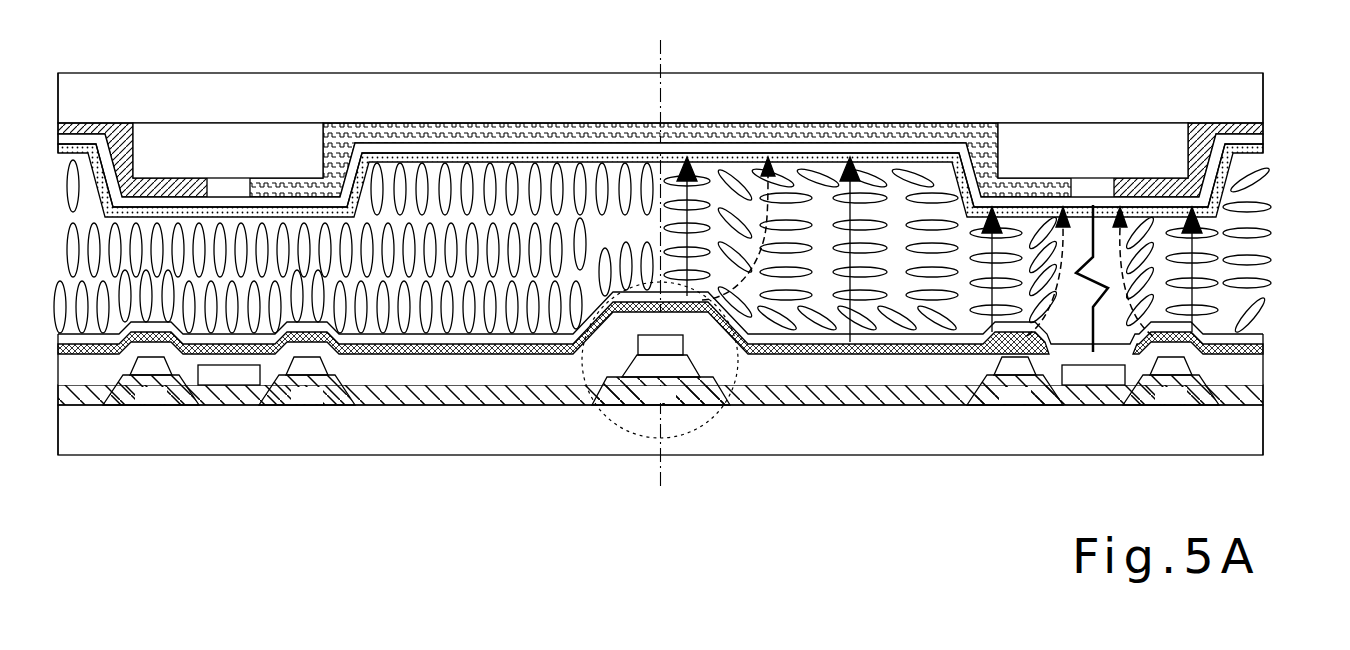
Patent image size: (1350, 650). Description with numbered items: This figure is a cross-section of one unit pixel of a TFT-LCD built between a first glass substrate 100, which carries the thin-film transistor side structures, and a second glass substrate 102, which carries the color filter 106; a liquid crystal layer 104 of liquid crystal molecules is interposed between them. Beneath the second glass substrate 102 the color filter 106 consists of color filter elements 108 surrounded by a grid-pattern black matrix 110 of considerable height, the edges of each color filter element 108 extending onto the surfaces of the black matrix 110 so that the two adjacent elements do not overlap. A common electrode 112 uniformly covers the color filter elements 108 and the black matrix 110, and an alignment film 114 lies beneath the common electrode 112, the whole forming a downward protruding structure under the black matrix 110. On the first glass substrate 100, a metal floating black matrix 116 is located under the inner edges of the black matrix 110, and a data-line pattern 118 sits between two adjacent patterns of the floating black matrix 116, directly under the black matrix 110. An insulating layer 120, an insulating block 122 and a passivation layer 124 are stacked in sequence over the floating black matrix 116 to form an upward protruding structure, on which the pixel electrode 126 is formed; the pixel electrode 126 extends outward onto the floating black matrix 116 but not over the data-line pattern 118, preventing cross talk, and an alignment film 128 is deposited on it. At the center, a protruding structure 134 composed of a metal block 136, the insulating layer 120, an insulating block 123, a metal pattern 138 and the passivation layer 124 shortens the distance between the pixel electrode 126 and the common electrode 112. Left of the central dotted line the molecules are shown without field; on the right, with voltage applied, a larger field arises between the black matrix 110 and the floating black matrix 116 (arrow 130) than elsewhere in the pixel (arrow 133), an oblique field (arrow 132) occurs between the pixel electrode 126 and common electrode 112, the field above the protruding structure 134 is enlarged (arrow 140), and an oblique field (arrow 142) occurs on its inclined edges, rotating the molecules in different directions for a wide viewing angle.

The first glass substrate 100 is at (1263, 432).
The second glass substrate 102 is at (1263, 88).
The liquid crystal layer 104 is at (1280, 283).
The color filter 106 is at (1263, 128).
The color filter element 108 is at (571, 125).
The black matrix 110 is at (212, 164).
The common electrode 112 is at (1263, 140).
The alignment film 114 is at (1263, 150).
The floating black matrix 116 is at (661, 390).
The data-line pattern 118 is at (661, 375).
The insulating layer 120 is at (1263, 398).
The insulating block 122 is at (661, 366).
The insulating block 123 is at (661, 366).
The passivation layer 124 is at (1263, 372).
The pixel electrode 126 is at (1263, 350).
The alignment film 128 is at (1263, 334).
The arrow 130 is at (992, 205).
The arrow 132 is at (1063, 206).
The arrow 133 is at (850, 156).
The protruding structure 134 is at (693, 434).
The metal block 136 is at (661, 391).
The metal pattern 138 is at (660, 345).
The arrow 140 is at (687, 156).
The arrow 142 is at (768, 156).